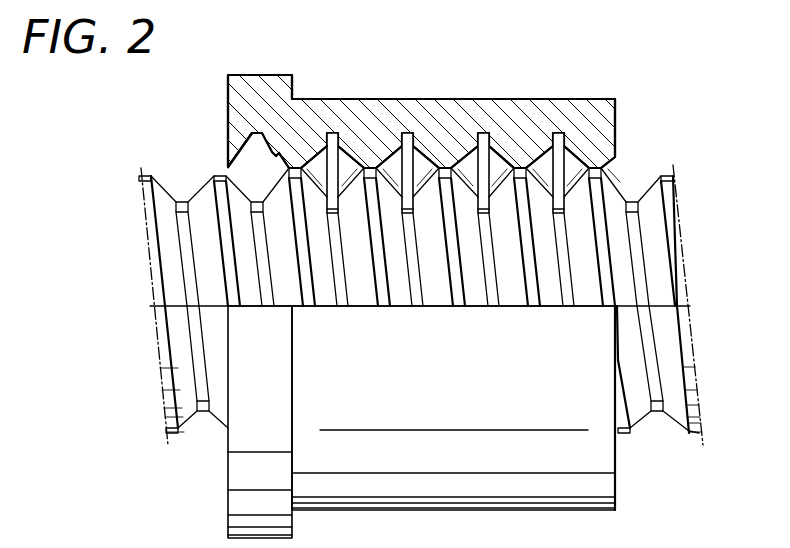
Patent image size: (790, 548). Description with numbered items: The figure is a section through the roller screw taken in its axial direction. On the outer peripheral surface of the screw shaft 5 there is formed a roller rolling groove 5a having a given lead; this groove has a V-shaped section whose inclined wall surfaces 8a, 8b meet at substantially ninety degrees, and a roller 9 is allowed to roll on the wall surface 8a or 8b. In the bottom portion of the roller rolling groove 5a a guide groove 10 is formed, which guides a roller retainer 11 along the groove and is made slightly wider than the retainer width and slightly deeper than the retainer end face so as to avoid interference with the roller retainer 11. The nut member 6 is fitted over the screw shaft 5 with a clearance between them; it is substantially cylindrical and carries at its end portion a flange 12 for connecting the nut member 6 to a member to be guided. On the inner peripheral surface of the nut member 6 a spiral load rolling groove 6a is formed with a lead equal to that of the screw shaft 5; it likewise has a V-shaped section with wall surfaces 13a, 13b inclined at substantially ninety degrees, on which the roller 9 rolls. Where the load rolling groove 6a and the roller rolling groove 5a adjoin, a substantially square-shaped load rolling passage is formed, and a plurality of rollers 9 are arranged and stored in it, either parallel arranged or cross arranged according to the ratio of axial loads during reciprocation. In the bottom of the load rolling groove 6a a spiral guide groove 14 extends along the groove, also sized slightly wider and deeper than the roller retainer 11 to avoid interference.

The screw shaft 5 is at (680, 240).
The roller rolling groove 5a is at (532, 207).
The nut member 6 is at (413, 88).
The load rolling groove 6a is at (468, 150).
The wall surface 8a is at (230, 167).
The wall surface 8b is at (277, 150).
The roller 9 is at (572, 158).
The guide groove 10 is at (230, 206).
The roller retainer 11 is at (552, 140).
The flange 12 is at (257, 76).
The wall surface 13a is at (264, 132).
The wall surface 13b is at (230, 165).
The guide groove 14 is at (249, 132).